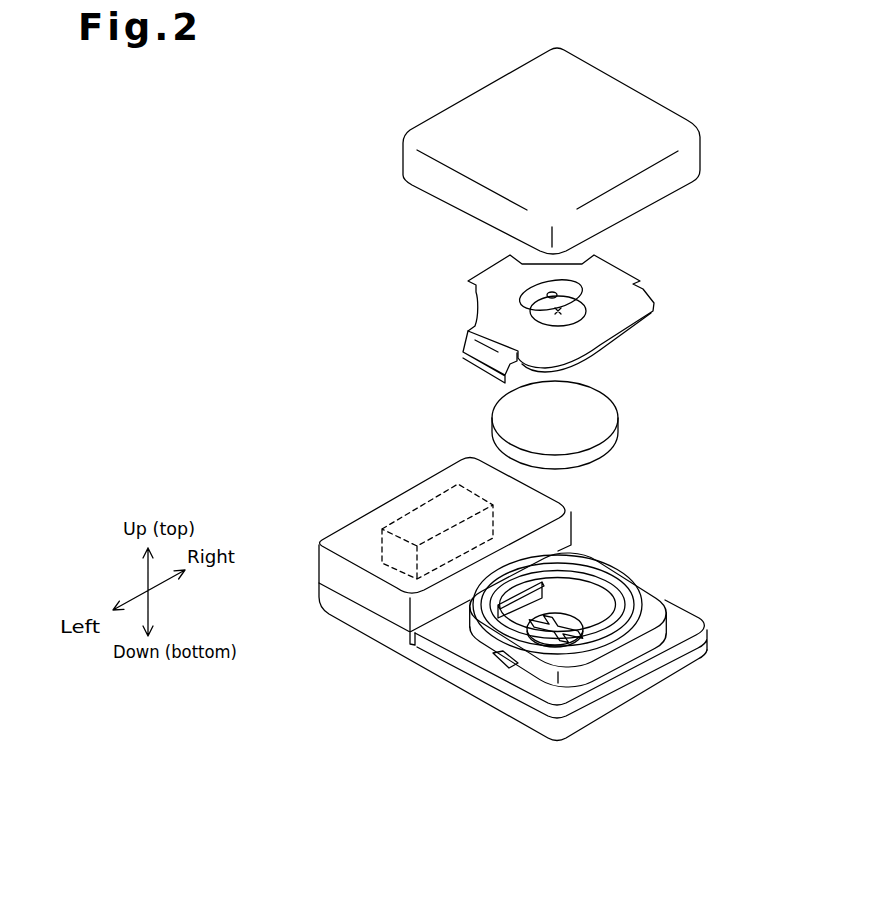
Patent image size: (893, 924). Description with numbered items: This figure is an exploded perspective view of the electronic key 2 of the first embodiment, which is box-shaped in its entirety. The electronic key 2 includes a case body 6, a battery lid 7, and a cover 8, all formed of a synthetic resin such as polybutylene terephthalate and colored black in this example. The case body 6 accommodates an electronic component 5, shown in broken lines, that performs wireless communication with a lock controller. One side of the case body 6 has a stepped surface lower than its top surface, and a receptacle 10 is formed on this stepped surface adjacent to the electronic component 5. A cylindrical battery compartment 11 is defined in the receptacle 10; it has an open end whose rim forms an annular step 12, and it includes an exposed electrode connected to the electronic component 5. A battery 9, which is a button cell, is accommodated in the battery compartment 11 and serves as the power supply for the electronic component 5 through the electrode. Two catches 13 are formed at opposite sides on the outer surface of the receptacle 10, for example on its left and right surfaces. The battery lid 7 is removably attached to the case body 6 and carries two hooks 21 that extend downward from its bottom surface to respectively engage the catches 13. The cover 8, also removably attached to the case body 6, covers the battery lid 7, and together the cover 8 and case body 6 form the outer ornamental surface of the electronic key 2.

The electronic key 2 is at (340, 358).
The electronic component 5 is at (410, 515).
The case body 6 is at (352, 531).
The battery lid 7 is at (641, 301).
The cover 8 is at (662, 117).
The battery 9 is at (605, 412).
The receptacle 10 is at (661, 513).
The battery compartment 11 is at (585, 587).
The annular step 12 is at (617, 582).
The catches 13 is at (498, 663).
The hooks 21 is at (473, 343).